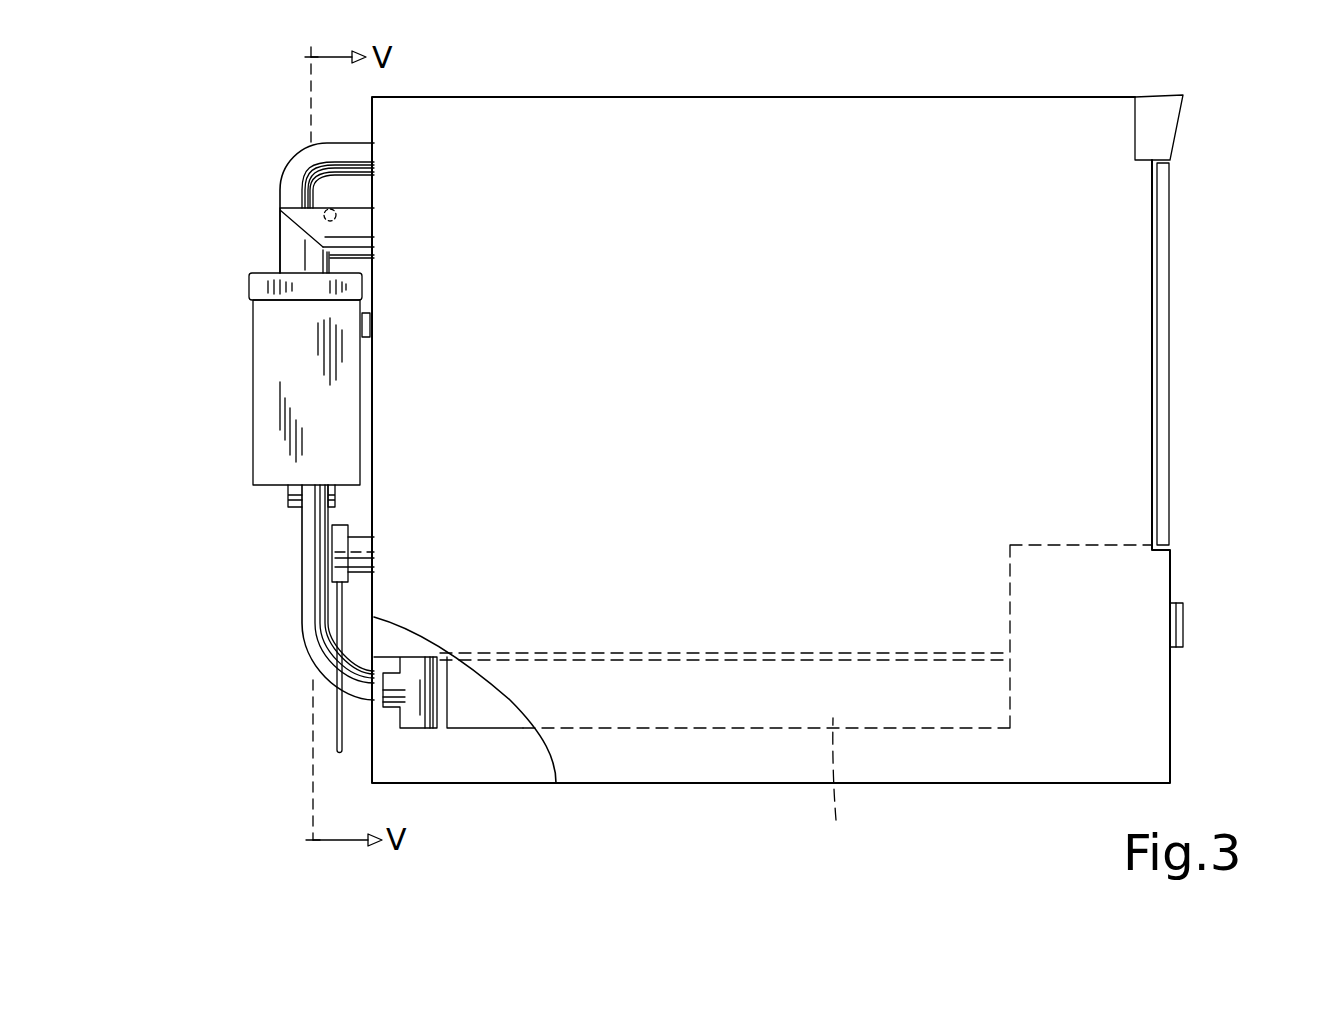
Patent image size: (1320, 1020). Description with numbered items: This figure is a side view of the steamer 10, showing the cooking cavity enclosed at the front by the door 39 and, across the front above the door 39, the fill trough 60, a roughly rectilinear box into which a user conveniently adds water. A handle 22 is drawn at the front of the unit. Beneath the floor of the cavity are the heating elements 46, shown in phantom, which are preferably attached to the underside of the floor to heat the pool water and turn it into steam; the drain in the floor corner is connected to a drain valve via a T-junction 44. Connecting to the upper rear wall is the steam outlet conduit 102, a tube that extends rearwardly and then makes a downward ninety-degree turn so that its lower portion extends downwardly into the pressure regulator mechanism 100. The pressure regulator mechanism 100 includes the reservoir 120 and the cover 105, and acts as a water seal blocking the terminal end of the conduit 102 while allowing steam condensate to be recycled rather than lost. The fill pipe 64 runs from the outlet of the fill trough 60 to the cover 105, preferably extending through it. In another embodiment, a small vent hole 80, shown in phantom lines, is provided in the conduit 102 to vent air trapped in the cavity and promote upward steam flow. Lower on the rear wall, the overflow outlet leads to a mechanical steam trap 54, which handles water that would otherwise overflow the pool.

The steamer 10 is at (840, 86).
The handle 22 is at (1185, 620).
The door 39 is at (1170, 337).
The T-junction 44 is at (410, 722).
The heating elements 46 is at (796, 702).
The mechanical steam trap 54 is at (332, 542).
The fill trough 60 is at (1172, 118).
The fill pipe 64 is at (308, 150).
The vent hole 80 is at (337, 209).
The pressure regulator mechanism 100 is at (265, 255).
The steam outlet conduit 102 is at (355, 222).
The cover 105 is at (255, 289).
The reservoir 120 is at (250, 400).